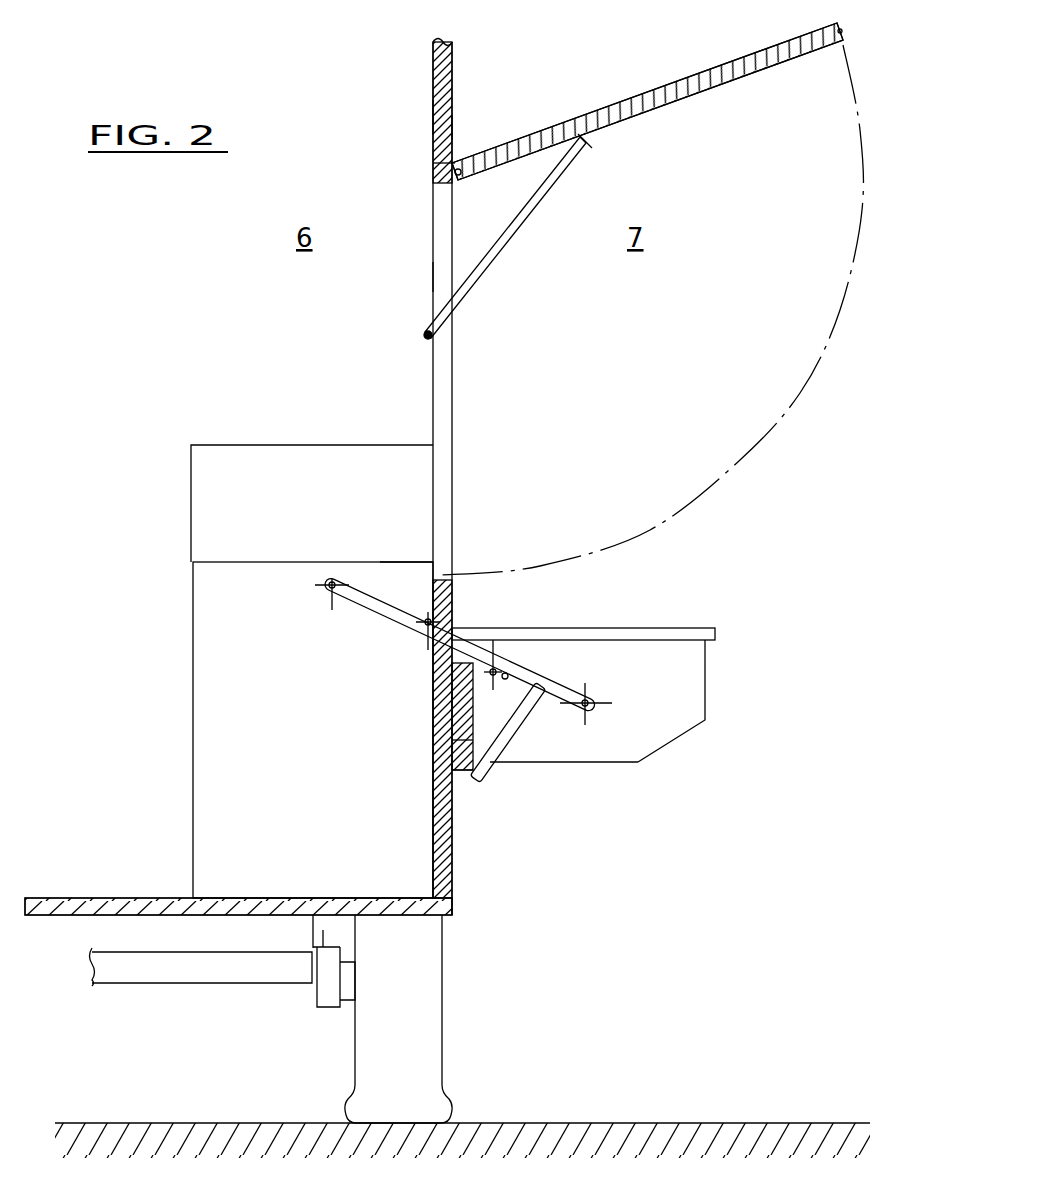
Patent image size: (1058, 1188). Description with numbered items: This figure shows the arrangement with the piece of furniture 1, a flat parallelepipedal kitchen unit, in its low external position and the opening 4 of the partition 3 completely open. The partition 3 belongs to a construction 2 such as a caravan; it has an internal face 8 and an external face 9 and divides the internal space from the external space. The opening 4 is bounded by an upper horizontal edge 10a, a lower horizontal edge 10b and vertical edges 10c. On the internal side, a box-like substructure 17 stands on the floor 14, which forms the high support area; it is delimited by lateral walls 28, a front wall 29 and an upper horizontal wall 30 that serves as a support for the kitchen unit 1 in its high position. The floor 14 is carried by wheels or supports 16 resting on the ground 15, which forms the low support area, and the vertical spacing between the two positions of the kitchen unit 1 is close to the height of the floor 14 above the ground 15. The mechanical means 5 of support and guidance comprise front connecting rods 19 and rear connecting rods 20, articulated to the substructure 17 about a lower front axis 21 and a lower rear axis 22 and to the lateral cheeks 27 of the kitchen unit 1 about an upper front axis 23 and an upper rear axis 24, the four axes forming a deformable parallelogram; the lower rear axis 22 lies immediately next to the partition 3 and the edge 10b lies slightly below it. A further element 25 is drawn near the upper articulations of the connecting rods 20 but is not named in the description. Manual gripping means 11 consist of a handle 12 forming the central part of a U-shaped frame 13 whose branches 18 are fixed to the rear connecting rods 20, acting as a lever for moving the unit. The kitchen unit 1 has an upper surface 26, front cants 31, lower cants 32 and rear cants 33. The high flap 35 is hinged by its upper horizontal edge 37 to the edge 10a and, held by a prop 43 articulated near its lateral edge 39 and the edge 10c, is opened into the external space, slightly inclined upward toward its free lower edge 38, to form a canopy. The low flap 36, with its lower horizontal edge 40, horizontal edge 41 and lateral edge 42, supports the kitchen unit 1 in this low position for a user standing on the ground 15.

The piece of furniture 1 is at (673, 628).
The construction 2 is at (452, 883).
The partition 3 is at (452, 92).
The opening 4 is at (452, 385).
The mechanical means of support and guidance 5 is at (398, 623).
The internal face 8 is at (433, 120).
The external face 9 is at (452, 128).
The upper horizontal edge 10a is at (437, 178).
The lower horizontal edge 10b is at (452, 681).
The vertical edge 10c is at (433, 277).
The manual gripping means 11 is at (498, 768).
The handle 12 is at (490, 788).
The U-shaped frame 13 is at (558, 762).
The floor 14 is at (104, 898).
The ground 15 is at (650, 1123).
The wheels or supports 16 is at (448, 1032).
The substructure 17 is at (196, 751).
The branches 18 is at (536, 709).
The front connecting rods 19 is at (392, 562).
The rear connecting rods 20 is at (587, 662).
The lower front axis 21 is at (332, 582).
The lower rear axis 22 is at (428, 621).
The upper front axis 23 is at (510, 674).
The upper rear axis 24 is at (598, 692).
The pivot 25 is at (562, 662).
The upper surface 26 is at (715, 628).
The lateral cheeks 27 is at (690, 698).
The lateral walls 28 is at (196, 806).
The front wall 29 is at (193, 656).
The upper horizontal wall 30 is at (208, 562).
The front cants 31 is at (451, 751).
The lower cants 32 is at (626, 770).
The rear cants 33 is at (706, 660).
The high flap 35 is at (681, 98).
The low flap 36 is at (456, 785).
The upper horizontal edge 37 is at (458, 177).
The lower horizontal edge 38 is at (840, 32).
The lateral edge 39 is at (630, 132).
The lower horizontal edge 40 is at (451, 707).
The horizontal edge 41 is at (464, 778).
The lateral edge 42 is at (492, 640).
The prop 43 is at (502, 248).